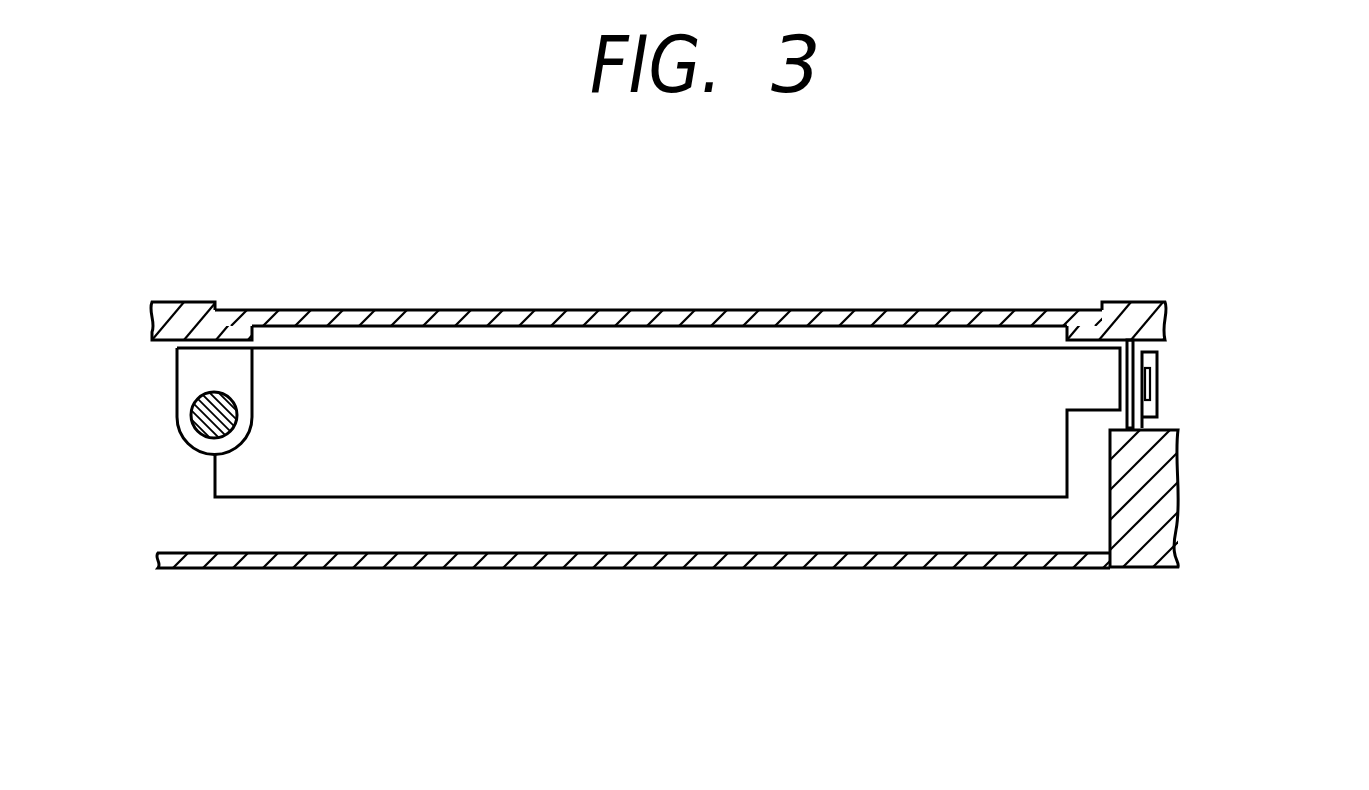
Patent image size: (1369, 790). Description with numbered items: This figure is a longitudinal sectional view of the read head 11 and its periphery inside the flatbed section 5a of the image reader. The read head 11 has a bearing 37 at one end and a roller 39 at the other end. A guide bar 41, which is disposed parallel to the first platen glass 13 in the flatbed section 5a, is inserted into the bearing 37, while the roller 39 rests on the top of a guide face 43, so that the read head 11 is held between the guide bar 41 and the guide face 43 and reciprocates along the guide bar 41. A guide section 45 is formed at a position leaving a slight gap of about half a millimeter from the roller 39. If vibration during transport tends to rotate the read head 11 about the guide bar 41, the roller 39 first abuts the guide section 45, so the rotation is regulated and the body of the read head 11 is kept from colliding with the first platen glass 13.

The first platen glass 13 is at (720, 317).
The guide section 45 is at (1163, 340).
The bearing 37 is at (198, 440).
The guide bar 41 is at (197, 400).
The read head 11 is at (520, 473).
The roller 39 is at (1133, 360).
The guide face 43 is at (1158, 428).
The flatbed section 5a is at (1155, 553).